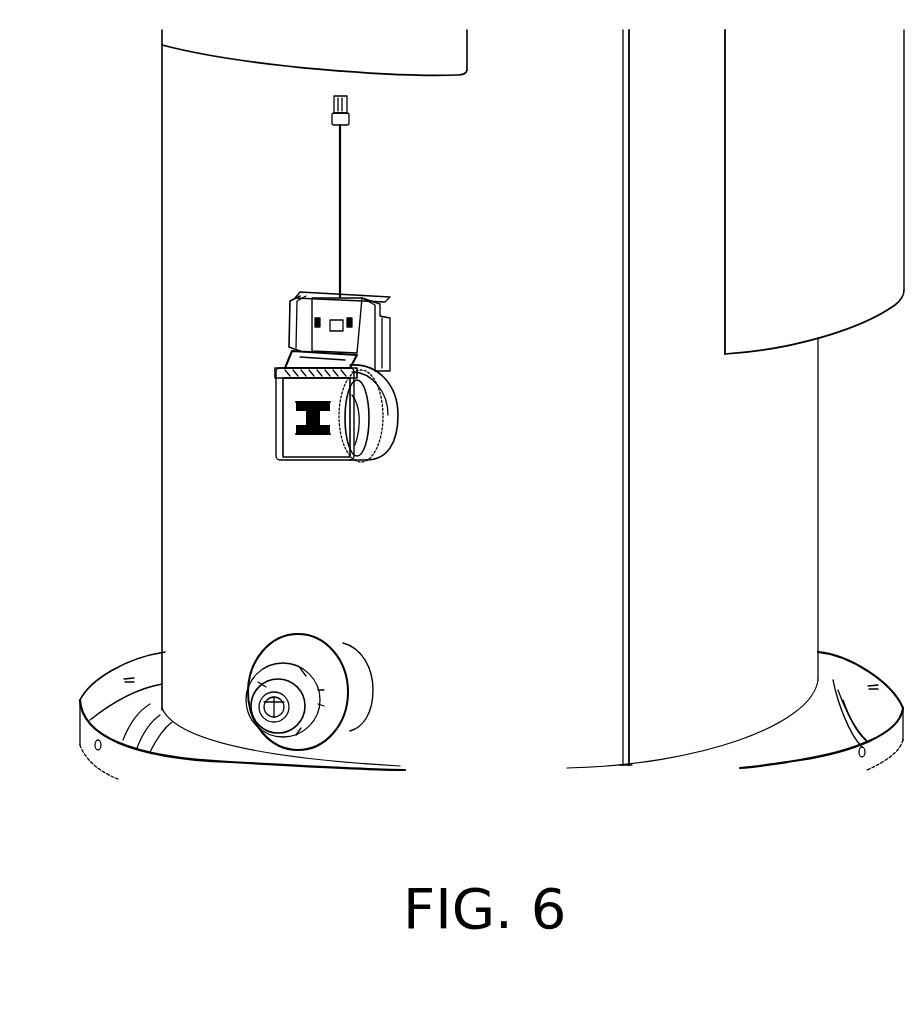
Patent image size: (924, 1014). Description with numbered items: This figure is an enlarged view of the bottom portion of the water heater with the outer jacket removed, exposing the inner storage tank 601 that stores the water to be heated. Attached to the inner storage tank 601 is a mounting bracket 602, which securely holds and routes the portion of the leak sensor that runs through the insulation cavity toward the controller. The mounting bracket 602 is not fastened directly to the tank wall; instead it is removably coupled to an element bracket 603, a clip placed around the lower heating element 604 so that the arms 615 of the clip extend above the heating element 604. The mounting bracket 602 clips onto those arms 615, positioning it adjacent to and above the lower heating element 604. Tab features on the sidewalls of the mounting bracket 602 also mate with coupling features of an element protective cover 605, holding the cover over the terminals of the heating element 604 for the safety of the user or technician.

The inner storage tank 601 is at (795, 465).
The mounting bracket 602 is at (350, 293).
The element bracket 603 is at (380, 377).
The heating element 604 is at (360, 428).
The element protective cover 605 is at (308, 440).
The arms 615 is at (388, 336).